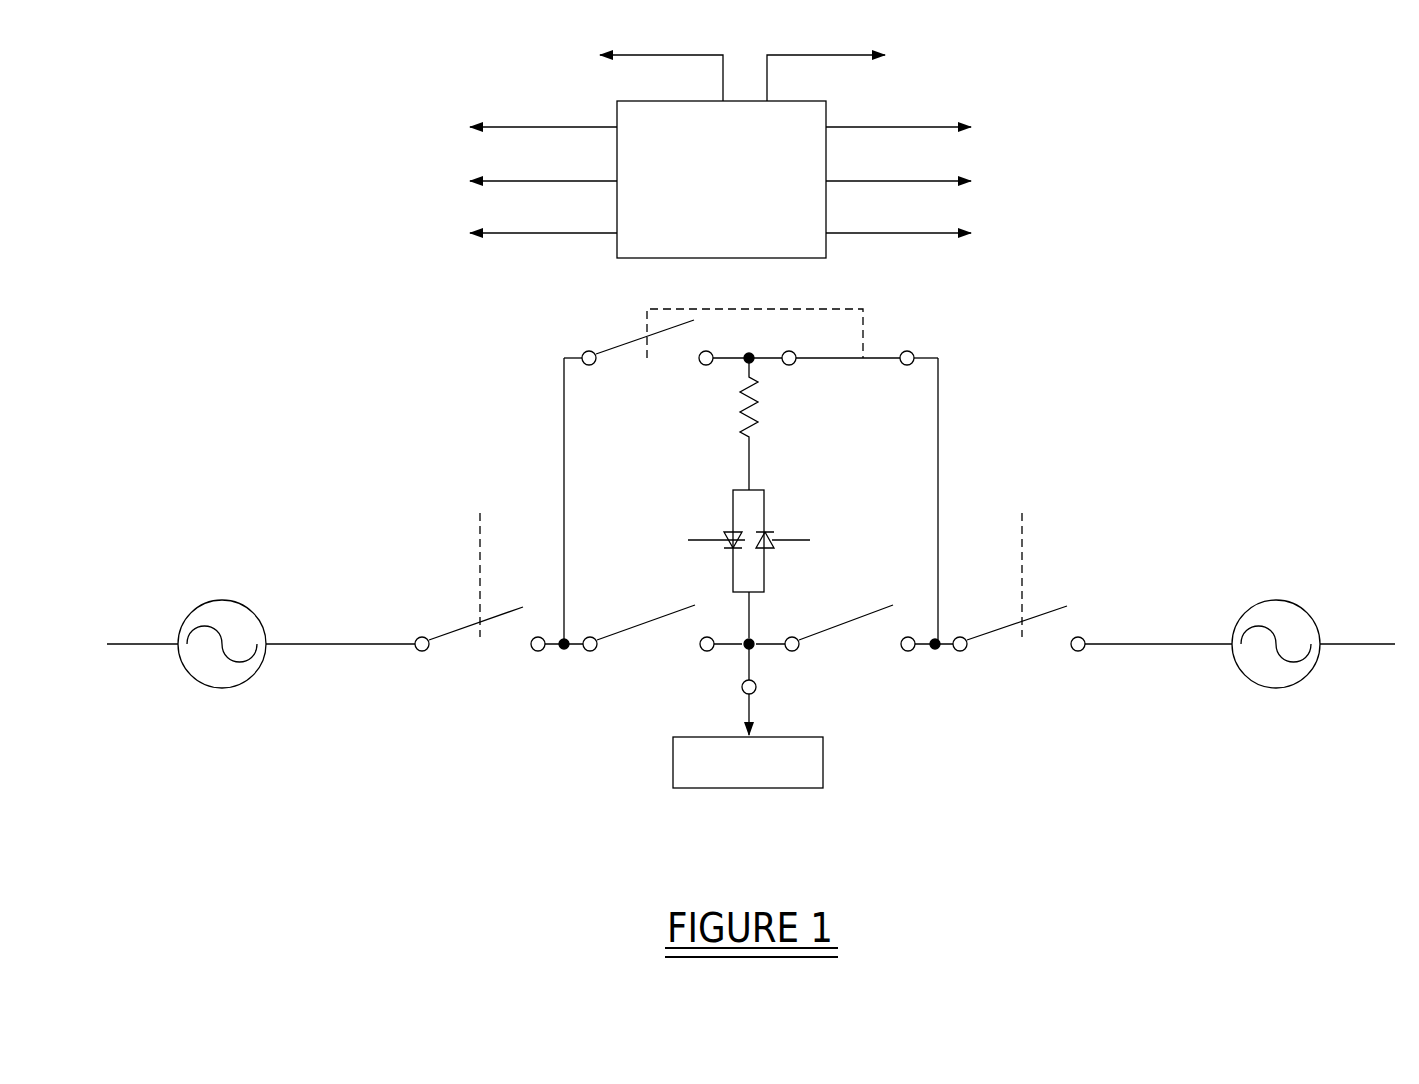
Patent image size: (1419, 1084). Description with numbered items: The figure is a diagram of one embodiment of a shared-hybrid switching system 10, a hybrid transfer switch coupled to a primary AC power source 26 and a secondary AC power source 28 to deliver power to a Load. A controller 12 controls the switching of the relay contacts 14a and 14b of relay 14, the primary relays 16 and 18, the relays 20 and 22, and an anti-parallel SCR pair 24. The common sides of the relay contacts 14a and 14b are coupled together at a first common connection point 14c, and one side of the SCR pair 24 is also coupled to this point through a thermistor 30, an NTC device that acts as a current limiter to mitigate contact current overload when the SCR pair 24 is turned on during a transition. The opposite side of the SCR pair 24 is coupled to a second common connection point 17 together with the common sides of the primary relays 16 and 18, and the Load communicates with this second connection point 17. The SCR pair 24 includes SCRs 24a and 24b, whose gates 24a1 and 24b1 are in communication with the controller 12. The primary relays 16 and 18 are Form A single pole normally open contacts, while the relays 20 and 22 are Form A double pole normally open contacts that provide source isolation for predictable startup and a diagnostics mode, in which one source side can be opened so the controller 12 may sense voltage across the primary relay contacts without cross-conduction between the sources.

The shared-hybrid switching system 10 is at (275, 230).
The controller 12 is at (805, 101).
The relay 14 is at (720, 452).
The relay contact 14a is at (628, 347).
The relay contact 14b is at (895, 355).
The first common connection point 14c is at (753, 361).
The primary relay 16 is at (637, 623).
The second common connection point 17 is at (746, 642).
The primary relay 18 is at (850, 620).
The relay 20 is at (462, 637).
The relay 22 is at (998, 637).
The anti-parallel SCR pair 24 is at (745, 543).
The SCR 24a is at (766, 550).
The gate 24a1 is at (796, 546).
The SCR 24b is at (731, 531).
The gate 24b1 is at (707, 545).
The primary AC power source 26 is at (220, 688).
The secondary AC power source 28 is at (1278, 688).
The thermistor 30 is at (756, 430).